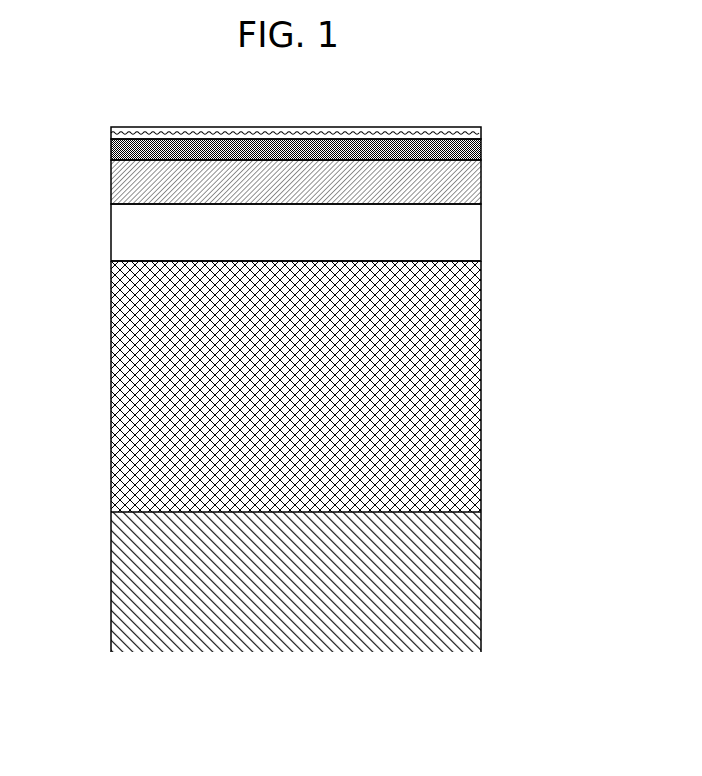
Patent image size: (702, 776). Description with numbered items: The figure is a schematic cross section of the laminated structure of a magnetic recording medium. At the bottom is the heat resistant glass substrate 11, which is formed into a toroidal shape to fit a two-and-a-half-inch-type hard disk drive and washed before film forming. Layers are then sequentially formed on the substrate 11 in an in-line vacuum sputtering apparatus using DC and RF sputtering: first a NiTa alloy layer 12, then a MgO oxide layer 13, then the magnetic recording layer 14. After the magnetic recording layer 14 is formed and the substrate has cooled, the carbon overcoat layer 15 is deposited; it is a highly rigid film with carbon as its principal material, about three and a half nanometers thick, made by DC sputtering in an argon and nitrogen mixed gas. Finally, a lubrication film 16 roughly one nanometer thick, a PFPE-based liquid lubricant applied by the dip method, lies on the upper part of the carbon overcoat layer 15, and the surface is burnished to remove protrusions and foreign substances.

The heat resistant glass substrate 11 is at (482, 585).
The NiTa alloy layer 12 is at (482, 385).
The MgO oxide layer 13 is at (482, 233).
The magnetic recording layer 14 is at (482, 181).
The carbon overcoat layer 15 is at (482, 146).
The lubrication film 16 is at (482, 131).